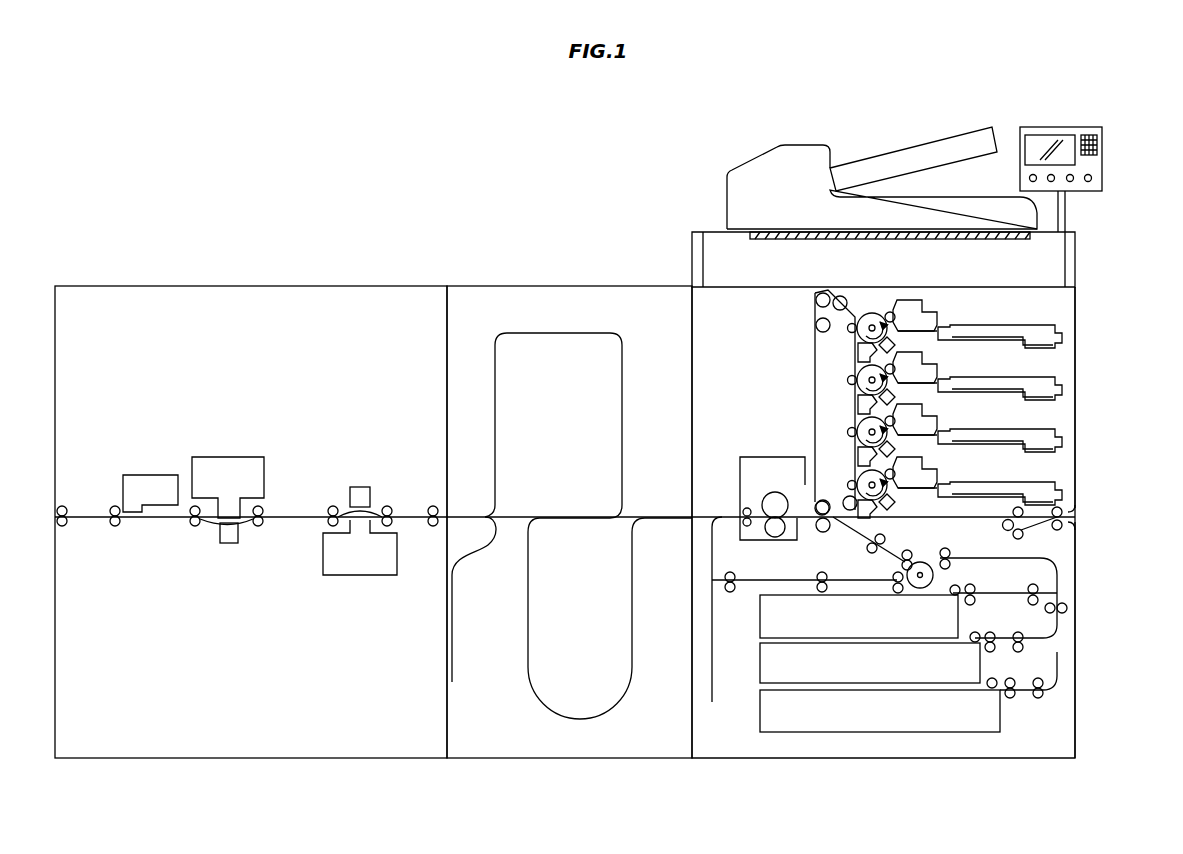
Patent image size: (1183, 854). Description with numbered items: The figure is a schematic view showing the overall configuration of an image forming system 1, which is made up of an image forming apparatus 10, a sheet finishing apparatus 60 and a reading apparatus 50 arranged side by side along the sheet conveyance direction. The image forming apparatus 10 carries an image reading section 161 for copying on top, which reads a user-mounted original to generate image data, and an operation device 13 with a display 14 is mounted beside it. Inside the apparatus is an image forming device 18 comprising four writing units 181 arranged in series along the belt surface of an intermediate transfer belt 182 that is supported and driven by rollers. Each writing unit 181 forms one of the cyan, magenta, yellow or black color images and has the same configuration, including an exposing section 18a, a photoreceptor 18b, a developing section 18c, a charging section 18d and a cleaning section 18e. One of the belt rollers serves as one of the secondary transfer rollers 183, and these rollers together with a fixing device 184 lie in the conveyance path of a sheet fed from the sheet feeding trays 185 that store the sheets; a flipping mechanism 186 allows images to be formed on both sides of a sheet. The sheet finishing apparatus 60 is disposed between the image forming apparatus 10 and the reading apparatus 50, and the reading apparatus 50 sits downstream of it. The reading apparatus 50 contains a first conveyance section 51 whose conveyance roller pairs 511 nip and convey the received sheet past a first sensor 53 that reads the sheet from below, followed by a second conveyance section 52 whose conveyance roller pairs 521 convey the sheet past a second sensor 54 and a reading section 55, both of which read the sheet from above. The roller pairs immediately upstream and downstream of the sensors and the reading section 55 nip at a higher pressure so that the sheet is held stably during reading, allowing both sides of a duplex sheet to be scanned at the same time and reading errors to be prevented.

The image forming system 1 is at (962, 100).
The image forming apparatus 10 is at (1032, 758).
The operation device 13 is at (1104, 160).
The display 14 is at (1038, 142).
The image reading section 161 is at (723, 245).
The image forming device 18 is at (752, 347).
The writing units 181 is at (1082, 332).
The intermediate transfer belt 182 is at (815, 345).
The secondary transfer rollers 183 is at (827, 522).
The fixing device 184 is at (755, 455).
The sheet feeding trays 185 is at (833, 735).
The flipping mechanism 186 is at (714, 643).
The exposing section 18a is at (993, 325).
The photoreceptor 18b is at (866, 313).
The developing section 18c is at (940, 318).
The charging section 18d is at (895, 347).
The cleaning section 18e is at (857, 352).
The reading apparatus 50 is at (392, 757).
The first conveyance section 51 is at (376, 486).
The conveyance roller pairs 511 is at (333, 506).
The second conveyance section 52 is at (272, 508).
The conveyance roller pairs 521 is at (115, 527).
The first sensor 53 is at (368, 577).
The second sensor 54 is at (213, 457).
The reading section 55 is at (138, 475).
The sheet finishing apparatus 60 is at (648, 758).